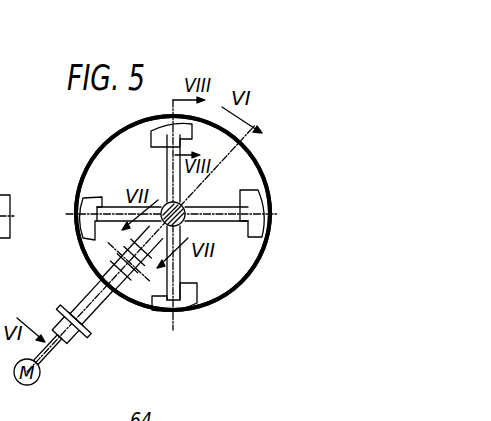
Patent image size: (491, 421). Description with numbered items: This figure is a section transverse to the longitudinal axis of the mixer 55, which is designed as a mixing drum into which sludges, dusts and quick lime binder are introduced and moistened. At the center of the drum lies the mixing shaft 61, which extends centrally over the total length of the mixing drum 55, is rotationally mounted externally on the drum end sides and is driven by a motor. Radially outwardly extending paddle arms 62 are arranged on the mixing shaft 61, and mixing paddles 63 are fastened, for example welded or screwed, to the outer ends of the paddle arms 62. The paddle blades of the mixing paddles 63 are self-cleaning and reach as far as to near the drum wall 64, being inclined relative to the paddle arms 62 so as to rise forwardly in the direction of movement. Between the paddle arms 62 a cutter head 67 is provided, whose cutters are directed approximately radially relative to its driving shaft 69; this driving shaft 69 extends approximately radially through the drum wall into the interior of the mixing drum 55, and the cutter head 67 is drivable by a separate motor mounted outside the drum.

The mixer 55 is at (268, 166).
The mixing shaft 61 is at (184, 210).
The paddle arm 62 is at (110, 208).
The mixing paddle 63 is at (86, 204).
The drum wall 64 is at (255, 269).
The cutter head 67 is at (112, 250).
The driving shaft 69 is at (122, 283).